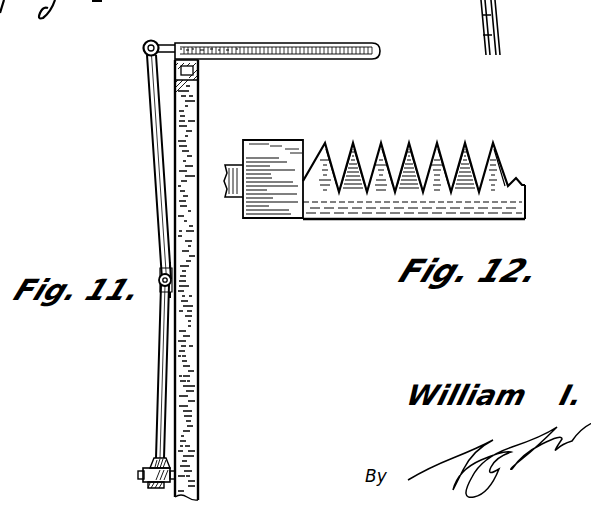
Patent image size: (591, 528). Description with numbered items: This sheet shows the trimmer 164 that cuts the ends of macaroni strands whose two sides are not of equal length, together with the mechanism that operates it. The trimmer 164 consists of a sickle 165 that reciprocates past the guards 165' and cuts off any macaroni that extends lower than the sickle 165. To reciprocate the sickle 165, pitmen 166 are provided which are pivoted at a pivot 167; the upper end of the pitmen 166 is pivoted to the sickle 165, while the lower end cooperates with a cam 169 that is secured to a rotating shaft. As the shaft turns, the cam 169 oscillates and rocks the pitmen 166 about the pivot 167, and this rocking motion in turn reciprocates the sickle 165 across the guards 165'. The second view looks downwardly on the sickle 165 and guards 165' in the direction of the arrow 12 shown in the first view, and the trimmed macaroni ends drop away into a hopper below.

In FIG. 11, the arrow 12 is at (283, 36).
In FIG. 11, the trimmer 164 is at (321, 41).
In FIG. 11, the sickle 165 is at (303, 55).
In FIG. 12, the sickle 165 is at (414, 157).
In FIG. 12, the guards 165' is at (542, 181).
In FIG. 11, the pitmen 166 is at (157, 178).
In FIG. 11, the pivot 167 is at (159, 287).
In FIG. 11, the cam 169 is at (140, 468).